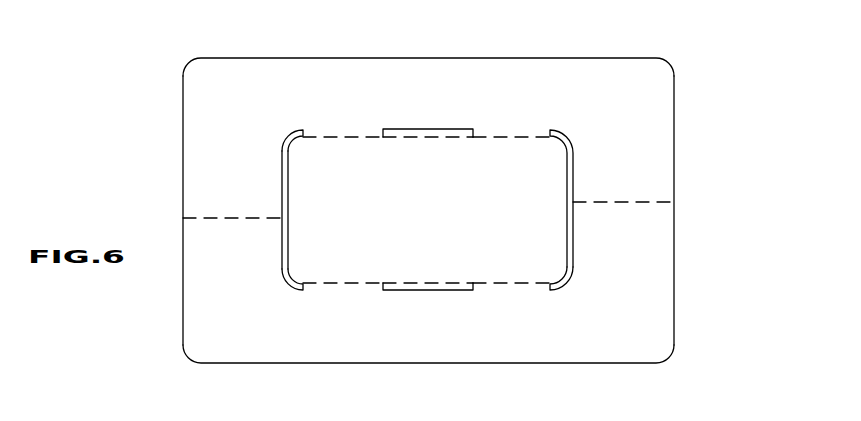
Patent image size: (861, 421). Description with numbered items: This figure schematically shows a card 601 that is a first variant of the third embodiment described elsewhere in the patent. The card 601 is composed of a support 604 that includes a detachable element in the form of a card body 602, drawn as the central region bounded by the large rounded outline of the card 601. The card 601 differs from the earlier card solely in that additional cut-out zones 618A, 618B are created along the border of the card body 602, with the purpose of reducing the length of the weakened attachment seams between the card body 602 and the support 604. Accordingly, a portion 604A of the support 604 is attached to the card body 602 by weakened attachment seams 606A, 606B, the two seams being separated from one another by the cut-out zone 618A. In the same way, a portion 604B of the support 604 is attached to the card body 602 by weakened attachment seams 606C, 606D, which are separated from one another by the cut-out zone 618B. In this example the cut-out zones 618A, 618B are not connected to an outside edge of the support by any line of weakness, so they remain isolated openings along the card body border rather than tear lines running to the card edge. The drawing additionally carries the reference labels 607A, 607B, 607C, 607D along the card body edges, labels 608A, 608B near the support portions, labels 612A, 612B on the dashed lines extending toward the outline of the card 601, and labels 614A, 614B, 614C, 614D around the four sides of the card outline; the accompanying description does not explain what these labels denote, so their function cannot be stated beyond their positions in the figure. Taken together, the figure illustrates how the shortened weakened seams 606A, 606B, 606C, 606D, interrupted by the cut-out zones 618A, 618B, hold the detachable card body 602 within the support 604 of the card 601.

The card 601 is at (428, 208).
The card body 602 is at (387, 225).
The support 604 is at (180, 180).
The portion of support 604A is at (222, 134).
The portion of support 604B is at (253, 245).
The weakened attachment seam 606A is at (328, 137).
The weakened attachment seam 606B is at (528, 137).
The weakened attachment seam 606C is at (527, 284).
The weakened attachment seam 606D is at (328, 284).
The right side wall 607A is at (572, 191).
The bottom center edge 607B is at (436, 284).
The left side wall 607C is at (285, 191).
The top center edge 607D is at (438, 138).
The right bracket lower corner 608A is at (573, 213).
The left bracket lower corner 608B is at (282, 242).
The right dashed axis line 612A is at (658, 202).
The left dashed axis line 612B is at (208, 217).
The housing right side 614A is at (674, 295).
The housing left side 614B is at (183, 297).
The housing bottom side 614C is at (512, 363).
The housing top side 614D is at (510, 58).
The cut-out zone 618A is at (407, 130).
The cut-out zone 618B is at (405, 291).